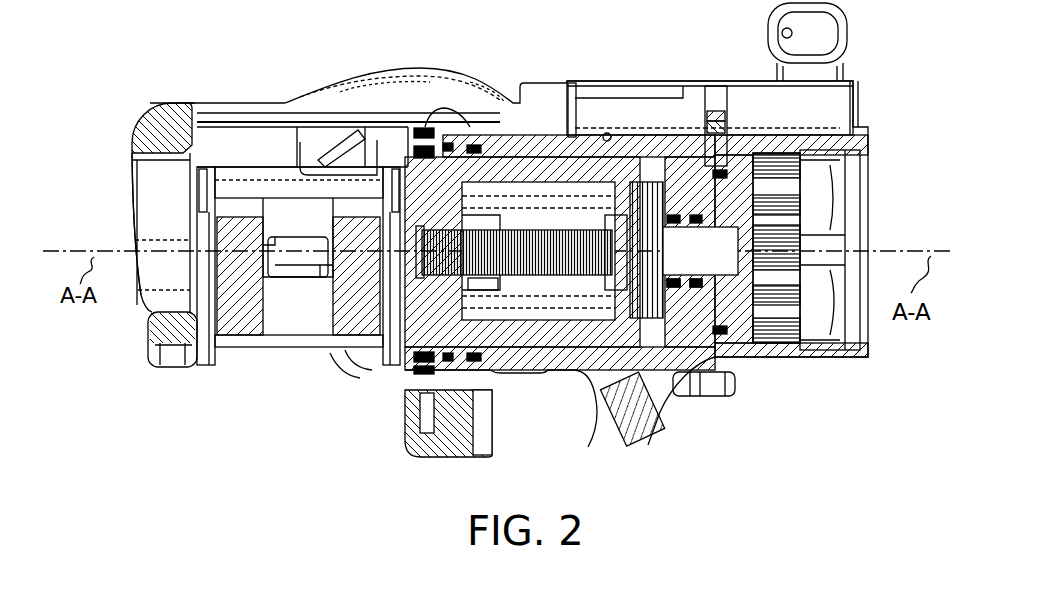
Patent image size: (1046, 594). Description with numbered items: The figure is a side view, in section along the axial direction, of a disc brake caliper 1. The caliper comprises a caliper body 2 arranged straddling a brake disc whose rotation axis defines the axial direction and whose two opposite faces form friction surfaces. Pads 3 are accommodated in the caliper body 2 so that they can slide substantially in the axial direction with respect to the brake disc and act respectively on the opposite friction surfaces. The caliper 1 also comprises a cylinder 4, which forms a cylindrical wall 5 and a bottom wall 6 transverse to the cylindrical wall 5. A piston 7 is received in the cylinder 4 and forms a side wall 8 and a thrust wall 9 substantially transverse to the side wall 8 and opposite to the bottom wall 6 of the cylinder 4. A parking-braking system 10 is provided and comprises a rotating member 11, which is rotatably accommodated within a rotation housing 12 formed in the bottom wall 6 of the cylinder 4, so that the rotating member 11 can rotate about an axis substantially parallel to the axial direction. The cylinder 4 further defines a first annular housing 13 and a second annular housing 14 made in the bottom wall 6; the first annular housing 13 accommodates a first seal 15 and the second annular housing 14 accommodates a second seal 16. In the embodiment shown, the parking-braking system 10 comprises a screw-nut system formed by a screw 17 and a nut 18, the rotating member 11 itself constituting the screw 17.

The disc brake caliper 1 is at (328, 74).
The caliper body 2 is at (481, 72).
The pads 3 is at (240, 362).
The cylinder 4 is at (540, 143).
The cylindrical wall 5 is at (607, 137).
The bottom wall 6 is at (687, 187).
The piston 7 is at (560, 353).
The side wall 8 is at (470, 330).
The thrust wall 9 is at (407, 175).
The parking-braking system 10 is at (575, 305).
The rotating member 11 is at (587, 227).
The rotation housing 12 is at (708, 262).
The first annular housing 13 is at (705, 377).
The second annular housing 14 is at (749, 367).
The first seal 15 is at (677, 290).
The second seal 16 is at (700, 290).
The screw 17 is at (520, 228).
The nut 18 is at (465, 292).